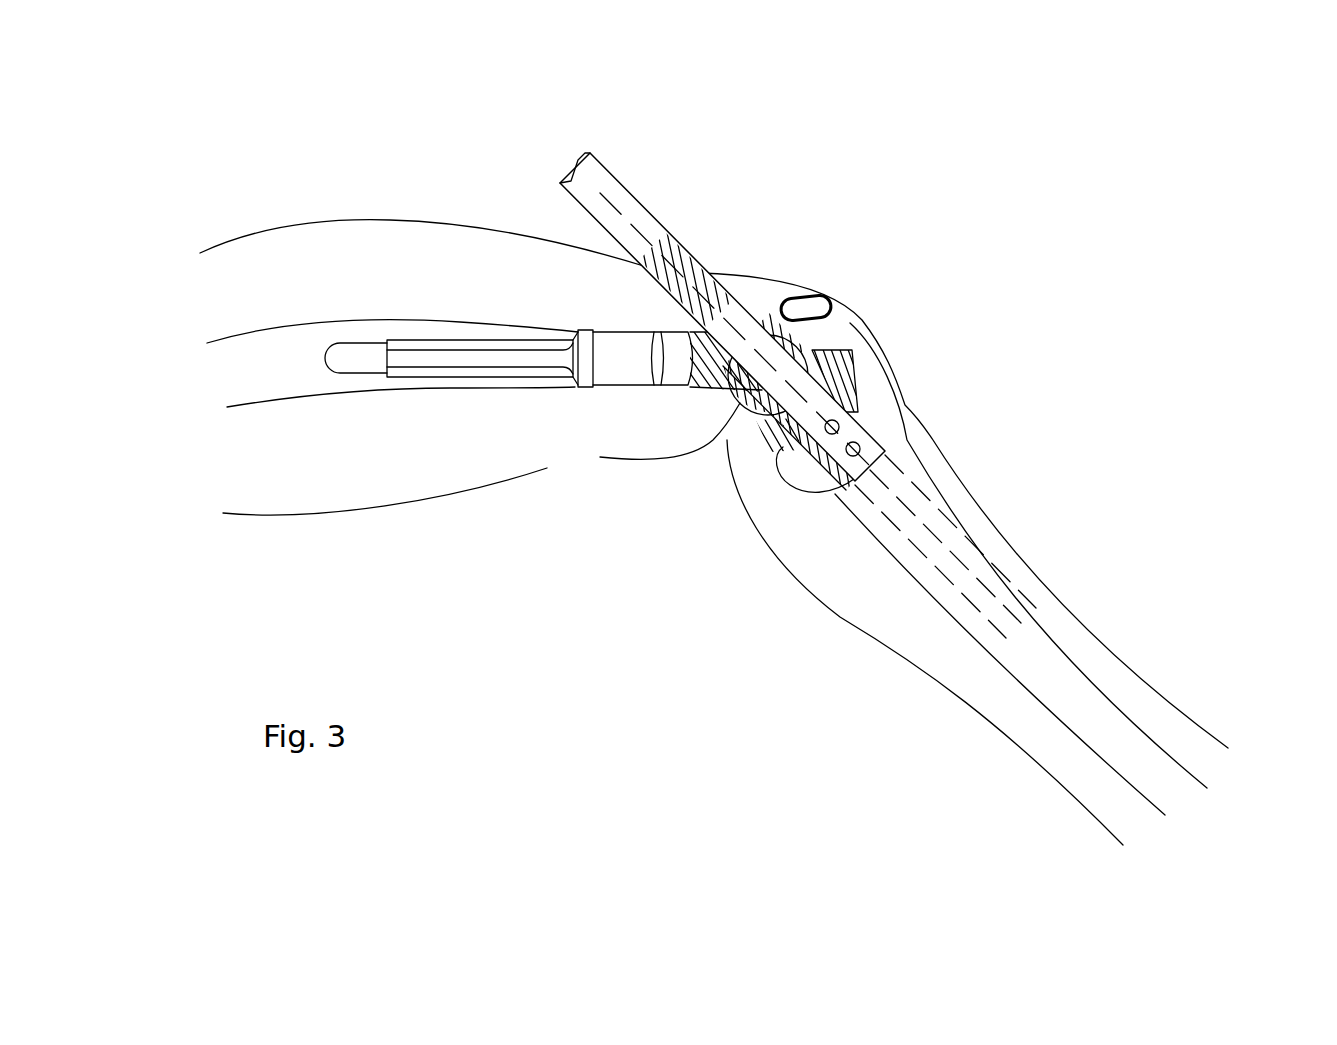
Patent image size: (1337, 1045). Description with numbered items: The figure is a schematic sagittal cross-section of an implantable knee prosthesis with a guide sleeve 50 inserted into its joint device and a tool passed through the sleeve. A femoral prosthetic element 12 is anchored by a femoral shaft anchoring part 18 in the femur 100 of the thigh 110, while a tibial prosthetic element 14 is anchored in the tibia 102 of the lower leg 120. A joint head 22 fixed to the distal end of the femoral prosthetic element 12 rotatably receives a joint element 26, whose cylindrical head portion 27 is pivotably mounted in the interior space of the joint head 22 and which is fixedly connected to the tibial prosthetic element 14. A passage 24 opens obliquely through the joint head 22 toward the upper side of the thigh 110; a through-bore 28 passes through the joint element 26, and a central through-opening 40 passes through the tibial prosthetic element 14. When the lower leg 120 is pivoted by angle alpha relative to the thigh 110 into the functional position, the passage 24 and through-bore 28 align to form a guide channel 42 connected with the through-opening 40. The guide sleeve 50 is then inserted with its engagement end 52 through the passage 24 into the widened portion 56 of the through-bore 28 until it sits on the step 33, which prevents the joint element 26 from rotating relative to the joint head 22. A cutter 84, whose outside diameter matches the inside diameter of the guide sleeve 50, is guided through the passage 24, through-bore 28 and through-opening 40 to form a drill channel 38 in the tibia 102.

The femur 100 is at (274, 348).
The thigh 110 is at (340, 220).
The tibia 102 is at (1095, 702).
The lower leg 120 is at (1100, 612).
The femoral prosthetic element 12 is at (485, 338).
The femoral shaft anchoring part 18 is at (447, 357).
The cutter 84 is at (603, 195).
The guide sleeve 50 is at (698, 258).
The step 33 is at (760, 357).
The joint head 22 is at (770, 323).
The passage 24 is at (733, 330).
The head portion 27 is at (755, 377).
The through-bore 28 is at (785, 380).
The tibial prosthetic element 14 is at (852, 387).
The through-opening 40 is at (823, 415).
The drill channel 38 is at (975, 575).
The joint element 26 is at (757, 377).
The guide channel 42 is at (747, 380).
The engagement end 52 is at (745, 370).
The widened portion 56 is at (680, 417).